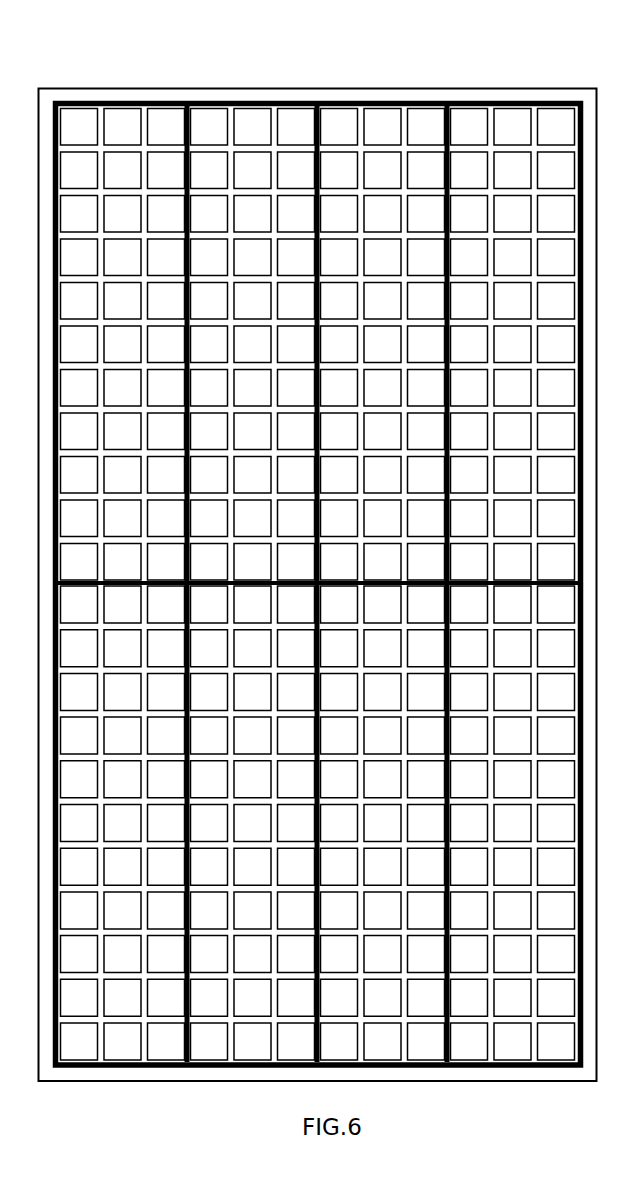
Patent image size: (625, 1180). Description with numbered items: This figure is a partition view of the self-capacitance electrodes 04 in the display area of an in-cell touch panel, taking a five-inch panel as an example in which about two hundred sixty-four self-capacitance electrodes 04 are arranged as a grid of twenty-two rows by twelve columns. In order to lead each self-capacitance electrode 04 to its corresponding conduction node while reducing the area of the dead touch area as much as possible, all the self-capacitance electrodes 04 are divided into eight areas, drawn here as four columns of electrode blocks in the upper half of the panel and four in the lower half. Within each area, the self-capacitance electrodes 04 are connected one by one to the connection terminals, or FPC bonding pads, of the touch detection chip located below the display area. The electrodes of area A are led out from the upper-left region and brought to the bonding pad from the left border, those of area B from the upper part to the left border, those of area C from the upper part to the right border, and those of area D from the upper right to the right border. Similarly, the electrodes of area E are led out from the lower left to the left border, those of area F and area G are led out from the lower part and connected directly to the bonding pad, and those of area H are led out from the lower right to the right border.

The self-capacitance electrode 04 is at (80, 108).
The Part A area A is at (123, 345).
The Part B area B is at (253, 345).
The Part C area C is at (383, 345).
The Part D area D is at (513, 345).
The Part E area E is at (123, 823).
The Part F area F is at (253, 823).
The Part G area G is at (383, 823).
The Part H area H is at (513, 823).